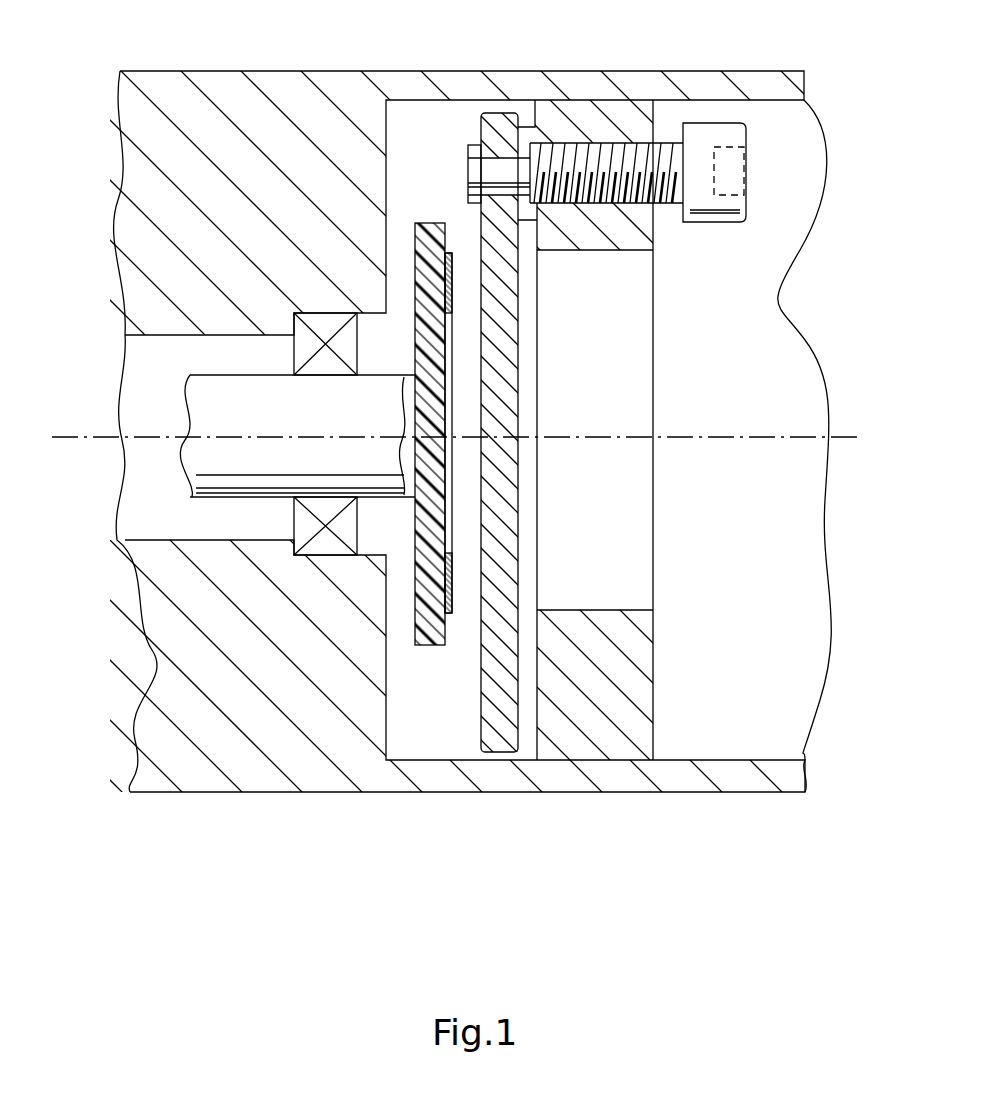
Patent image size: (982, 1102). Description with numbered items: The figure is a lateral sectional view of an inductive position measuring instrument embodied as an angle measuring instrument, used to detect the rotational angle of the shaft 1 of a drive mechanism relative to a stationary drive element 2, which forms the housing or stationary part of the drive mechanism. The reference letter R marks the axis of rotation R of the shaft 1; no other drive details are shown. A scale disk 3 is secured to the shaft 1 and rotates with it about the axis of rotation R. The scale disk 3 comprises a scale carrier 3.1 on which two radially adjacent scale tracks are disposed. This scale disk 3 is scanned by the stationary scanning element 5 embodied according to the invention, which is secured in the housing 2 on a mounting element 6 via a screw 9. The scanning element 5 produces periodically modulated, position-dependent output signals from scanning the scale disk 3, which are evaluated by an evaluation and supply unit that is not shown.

The shaft 1 is at (197, 460).
The stationary drive element 2 is at (150, 250).
The scale disk 3 is at (427, 672).
The scale carrier 3.1 is at (415, 230).
The scanning element 5 is at (503, 730).
The mounting element 6 is at (578, 738).
The screw 9 is at (572, 157).
The axis of rotation R is at (80, 437).